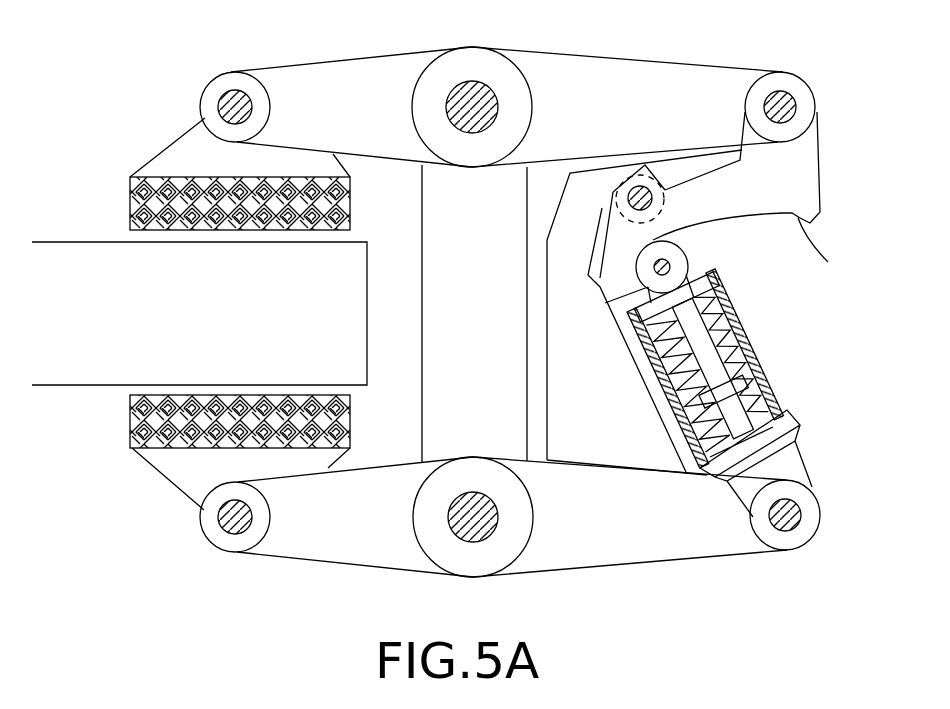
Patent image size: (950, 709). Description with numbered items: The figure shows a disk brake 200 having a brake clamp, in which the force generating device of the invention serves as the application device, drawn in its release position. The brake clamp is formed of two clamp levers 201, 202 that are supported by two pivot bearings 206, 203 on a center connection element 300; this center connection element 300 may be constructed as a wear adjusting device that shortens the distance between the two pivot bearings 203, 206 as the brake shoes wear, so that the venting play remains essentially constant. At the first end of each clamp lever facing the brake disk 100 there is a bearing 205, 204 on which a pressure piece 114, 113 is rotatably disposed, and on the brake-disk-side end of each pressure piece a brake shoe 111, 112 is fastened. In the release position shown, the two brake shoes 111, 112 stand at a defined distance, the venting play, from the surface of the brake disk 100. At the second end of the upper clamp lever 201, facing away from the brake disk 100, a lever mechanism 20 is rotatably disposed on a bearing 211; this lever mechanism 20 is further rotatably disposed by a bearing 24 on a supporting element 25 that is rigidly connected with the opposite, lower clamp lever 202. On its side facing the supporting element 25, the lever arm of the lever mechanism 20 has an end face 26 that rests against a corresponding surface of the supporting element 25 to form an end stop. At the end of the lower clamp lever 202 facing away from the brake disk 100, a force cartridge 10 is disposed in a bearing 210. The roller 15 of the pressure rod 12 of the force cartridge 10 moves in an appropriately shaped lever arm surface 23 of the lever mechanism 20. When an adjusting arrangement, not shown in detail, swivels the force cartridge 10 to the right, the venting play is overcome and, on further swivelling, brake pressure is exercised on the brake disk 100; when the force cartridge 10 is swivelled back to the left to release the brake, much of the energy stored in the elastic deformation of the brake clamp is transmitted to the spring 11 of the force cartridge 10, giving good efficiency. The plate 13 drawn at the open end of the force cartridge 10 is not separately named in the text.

The force cartridge 10 is at (739, 380).
The spring 11 is at (780, 403).
The pressure rod 12 is at (710, 365).
The pressure plate 13 is at (712, 280).
The roller 15 is at (686, 262).
The lever mechanism 20 is at (822, 188).
The lever arm surface 23 is at (831, 253).
The bearing 24 is at (636, 193).
The supporting element 25 is at (610, 415).
The end face 26 is at (605, 303).
The brake disk 100 is at (98, 385).
The brake shoe 111 is at (150, 203).
The brake shoe 112 is at (130, 430).
The pressure piece 113 is at (170, 484).
The pressure piece 114 is at (168, 146).
The disk brake 200 is at (524, 308).
The clamp lever 201 is at (598, 42).
The clamp lever 202 is at (643, 562).
The pivot bearing 203 is at (468, 530).
The bearing 204 is at (238, 530).
The bearing 205 is at (230, 100).
The pivot bearing 206 is at (482, 92).
The bearing 210 is at (802, 522).
The bearing 211 is at (786, 92).
The center connection element 300 is at (478, 347).